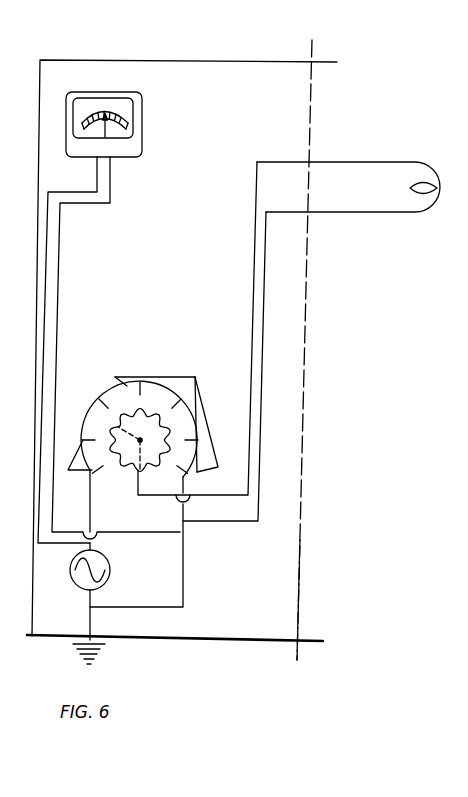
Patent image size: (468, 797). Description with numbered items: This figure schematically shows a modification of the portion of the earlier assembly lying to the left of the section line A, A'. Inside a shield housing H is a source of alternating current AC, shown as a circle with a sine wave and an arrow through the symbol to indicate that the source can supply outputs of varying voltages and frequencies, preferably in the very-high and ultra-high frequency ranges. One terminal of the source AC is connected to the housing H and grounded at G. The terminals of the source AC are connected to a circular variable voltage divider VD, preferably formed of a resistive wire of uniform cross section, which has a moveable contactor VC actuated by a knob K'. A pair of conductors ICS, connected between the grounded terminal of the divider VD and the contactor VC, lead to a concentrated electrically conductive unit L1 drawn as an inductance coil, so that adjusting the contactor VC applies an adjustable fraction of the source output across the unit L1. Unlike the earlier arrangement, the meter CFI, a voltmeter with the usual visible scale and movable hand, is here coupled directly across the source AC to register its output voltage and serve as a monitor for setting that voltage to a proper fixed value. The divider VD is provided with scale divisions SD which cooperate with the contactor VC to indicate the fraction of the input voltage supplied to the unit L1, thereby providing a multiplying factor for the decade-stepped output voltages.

The shield housing H is at (85, 59).
The meter CFI is at (134, 92).
The line A is at (315, 348).
The line A' is at (309, 608).
The concentrated electrically conductive unit L1 is at (385, 162).
The variable voltage divider VD is at (119, 381).
The scale divisions SD is at (195, 377).
The moveable contactor VC is at (114, 424).
The knob K' is at (110, 500).
The conductors ICS is at (198, 494).
The source of alternating current AC is at (67, 583).
The ground G is at (175, 652).